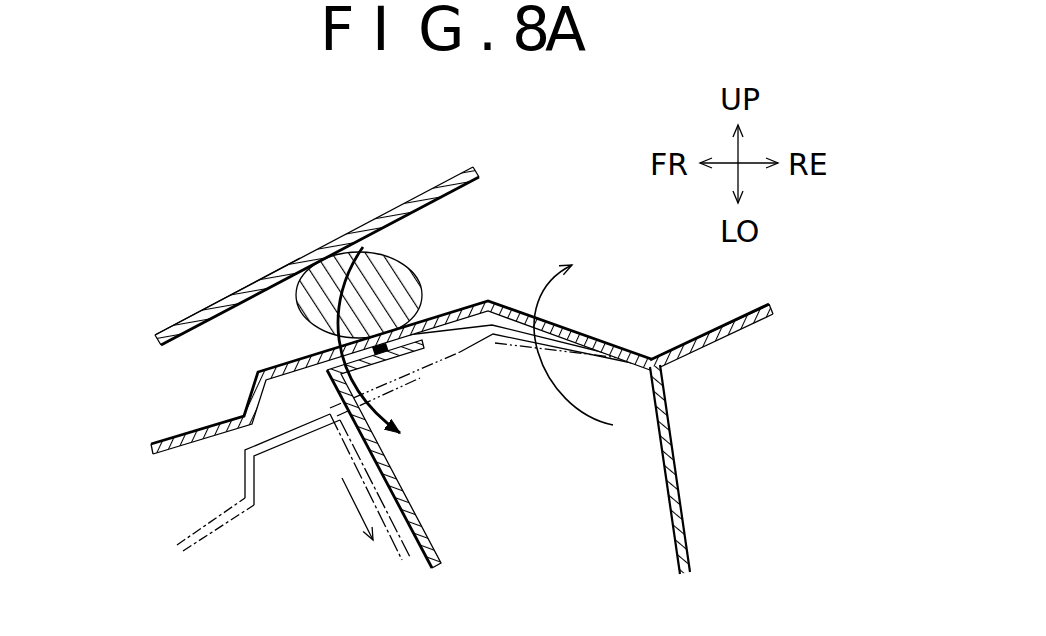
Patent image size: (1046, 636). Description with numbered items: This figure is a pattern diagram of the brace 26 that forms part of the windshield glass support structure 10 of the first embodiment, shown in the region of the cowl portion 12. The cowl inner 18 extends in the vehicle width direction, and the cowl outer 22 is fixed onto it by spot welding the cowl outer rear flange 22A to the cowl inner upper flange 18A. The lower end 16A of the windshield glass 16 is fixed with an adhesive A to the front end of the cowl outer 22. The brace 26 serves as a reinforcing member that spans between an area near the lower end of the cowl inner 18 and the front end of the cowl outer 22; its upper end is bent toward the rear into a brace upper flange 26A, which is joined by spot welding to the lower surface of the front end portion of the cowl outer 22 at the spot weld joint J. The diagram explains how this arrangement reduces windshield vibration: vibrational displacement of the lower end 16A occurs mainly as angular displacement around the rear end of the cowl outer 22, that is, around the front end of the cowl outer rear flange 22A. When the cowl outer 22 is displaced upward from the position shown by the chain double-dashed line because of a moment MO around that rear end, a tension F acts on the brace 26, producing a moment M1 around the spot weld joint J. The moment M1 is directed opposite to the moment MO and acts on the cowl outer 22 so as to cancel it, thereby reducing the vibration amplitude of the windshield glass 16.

The windshield glass support structure 10 is at (520, 258).
The cowl portion 12 is at (593, 337).
The windshield glass 16 is at (417, 200).
The lower end of the windshield glass 16A is at (268, 277).
The cowl inner 18 is at (677, 470).
The cowl inner upper flange 18A is at (728, 337).
The cowl outer 22 is at (447, 305).
The cowl outer rear flange 22A is at (715, 326).
The brace 26 is at (383, 510).
The brace upper flange 26A is at (422, 346).
The adhesive A is at (397, 277).
The spot weld joint J is at (433, 337).
The moment M1 is at (400, 418).
The moment M0 MO is at (558, 407).
The tension F is at (352, 512).